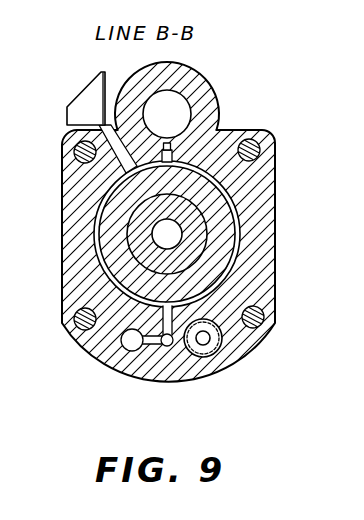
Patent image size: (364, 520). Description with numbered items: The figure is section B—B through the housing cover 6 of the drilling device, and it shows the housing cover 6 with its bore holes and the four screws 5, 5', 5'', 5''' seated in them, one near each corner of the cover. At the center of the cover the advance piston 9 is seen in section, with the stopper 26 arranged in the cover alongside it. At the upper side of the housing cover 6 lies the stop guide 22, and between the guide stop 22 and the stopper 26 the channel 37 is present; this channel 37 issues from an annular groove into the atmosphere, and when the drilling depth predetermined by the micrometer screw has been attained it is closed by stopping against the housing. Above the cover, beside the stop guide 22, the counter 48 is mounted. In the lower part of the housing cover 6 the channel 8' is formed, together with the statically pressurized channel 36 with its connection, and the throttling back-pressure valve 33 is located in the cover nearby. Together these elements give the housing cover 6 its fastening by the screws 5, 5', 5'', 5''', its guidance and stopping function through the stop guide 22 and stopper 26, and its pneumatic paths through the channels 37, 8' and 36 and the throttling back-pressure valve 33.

The housing cover 6 is at (262, 180).
The guide stop 22 is at (177, 103).
The advance piston 9 is at (237, 224).
The stopper 26 is at (240, 285).
The screw 5 is at (61, 156).
The screw 5' is at (267, 150).
The screw 5'' is at (59, 319).
The screw 5''' is at (282, 325).
The counter 48 is at (80, 110).
The channel 37 is at (170, 143).
The channel 8' is at (139, 371).
The statically pressurized channel 36 is at (167, 346).
The throttling back-pressure valve 33 is at (218, 350).